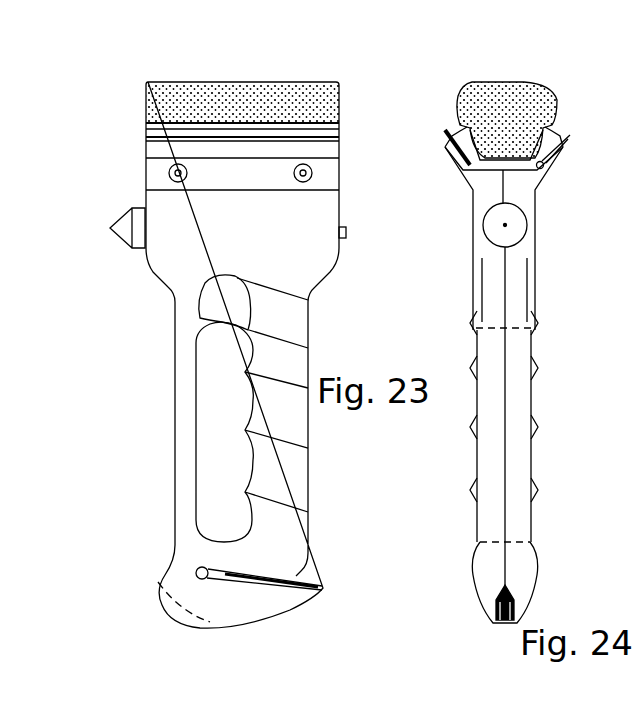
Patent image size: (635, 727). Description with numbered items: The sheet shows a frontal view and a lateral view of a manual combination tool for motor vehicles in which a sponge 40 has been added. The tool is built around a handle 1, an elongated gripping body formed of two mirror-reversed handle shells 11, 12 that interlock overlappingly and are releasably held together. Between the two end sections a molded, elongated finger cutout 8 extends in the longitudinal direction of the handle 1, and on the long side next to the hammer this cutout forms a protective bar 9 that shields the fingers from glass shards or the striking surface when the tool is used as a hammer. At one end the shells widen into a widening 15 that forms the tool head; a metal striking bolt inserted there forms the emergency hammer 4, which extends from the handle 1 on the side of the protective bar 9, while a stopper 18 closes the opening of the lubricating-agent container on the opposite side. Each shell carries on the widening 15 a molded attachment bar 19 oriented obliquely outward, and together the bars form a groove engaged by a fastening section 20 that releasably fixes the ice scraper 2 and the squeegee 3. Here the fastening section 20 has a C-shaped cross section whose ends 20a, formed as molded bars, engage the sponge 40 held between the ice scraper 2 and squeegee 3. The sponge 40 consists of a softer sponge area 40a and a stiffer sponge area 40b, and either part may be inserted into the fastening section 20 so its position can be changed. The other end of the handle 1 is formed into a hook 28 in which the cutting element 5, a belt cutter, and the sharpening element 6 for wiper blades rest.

In FIG. 23, the handle 1 is at (315, 482).
In FIG. 24, the handle 1 is at (532, 393).
In FIG. 24, the ice scraper 2 is at (442, 138).
In FIG. 23, the squeegee 3 is at (178, 140).
In FIG. 24, the squeegee 3 is at (568, 138).
In FIG. 23, the emergency hammer 4 is at (123, 230).
In FIG. 24, the emergency hammer 4 is at (515, 223).
In FIG. 23, the cutting element 5 is at (298, 577).
In FIG. 23, the sharpening element 6 is at (162, 608).
In FIG. 24, the sharpening element 6 is at (498, 607).
In FIG. 23, the finger cutout 8 is at (218, 435).
In FIG. 24, the finger cutout 8 is at (517, 513).
In FIG. 23, the protective bar 9 is at (188, 358).
In FIG. 24, the handle shell 11 is at (493, 447).
In FIG. 24, the handle shell 12 is at (515, 487).
In FIG. 23, the widening 15 is at (307, 210).
In FIG. 24, the widening 15 is at (518, 192).
In FIG. 23, the stopper 18 is at (347, 232).
In FIG. 24, the attachment bar 19 is at (453, 163).
In FIG. 24, the fastening section 20 is at (473, 178).
In FIG. 23, the ends of the C 20a is at (148, 130).
In FIG. 24, the ends of the C 20a is at (470, 128).
In FIG. 23, the hook 28 is at (218, 602).
In FIG. 23, the sponge 40 is at (215, 82).
In FIG. 24, the sponge 40 is at (532, 83).
In FIG. 24, the softer sponge area 40a is at (482, 102).
In FIG. 24, the stiffer sponge area 40b is at (546, 160).